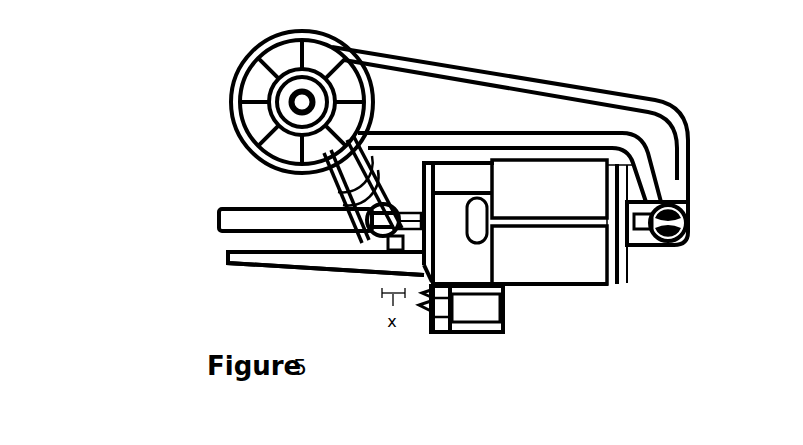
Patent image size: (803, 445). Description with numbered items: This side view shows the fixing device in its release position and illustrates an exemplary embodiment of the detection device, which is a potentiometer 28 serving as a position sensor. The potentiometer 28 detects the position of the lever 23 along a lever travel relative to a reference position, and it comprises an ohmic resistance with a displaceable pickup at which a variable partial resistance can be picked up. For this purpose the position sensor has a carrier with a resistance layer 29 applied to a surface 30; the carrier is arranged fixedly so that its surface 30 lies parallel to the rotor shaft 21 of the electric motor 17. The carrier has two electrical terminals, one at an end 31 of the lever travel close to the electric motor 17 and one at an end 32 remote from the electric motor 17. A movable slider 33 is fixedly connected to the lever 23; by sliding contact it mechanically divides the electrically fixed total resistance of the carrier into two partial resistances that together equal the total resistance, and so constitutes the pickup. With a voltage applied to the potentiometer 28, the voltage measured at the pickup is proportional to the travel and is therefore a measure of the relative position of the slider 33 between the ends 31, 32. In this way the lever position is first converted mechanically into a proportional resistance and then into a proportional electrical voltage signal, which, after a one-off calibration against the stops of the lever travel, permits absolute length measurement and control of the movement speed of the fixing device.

The electric motor 17 is at (575, 220).
The rotor shaft 21 is at (236, 222).
The lever 23 is at (375, 190).
The potentiometer 28 is at (311, 259).
The resistance layer 29 is at (289, 251).
The surface 30 is at (326, 263).
The end close to the electric motor 31 is at (374, 273).
The end remote from the electric motor 32 is at (228, 258).
The slider 33 is at (383, 254).